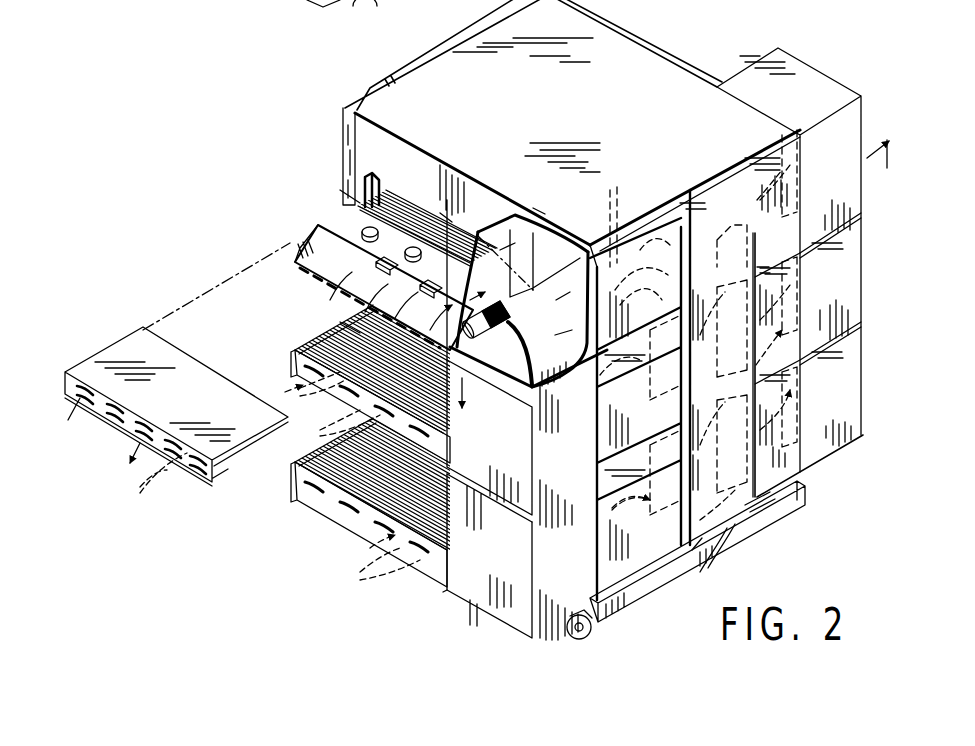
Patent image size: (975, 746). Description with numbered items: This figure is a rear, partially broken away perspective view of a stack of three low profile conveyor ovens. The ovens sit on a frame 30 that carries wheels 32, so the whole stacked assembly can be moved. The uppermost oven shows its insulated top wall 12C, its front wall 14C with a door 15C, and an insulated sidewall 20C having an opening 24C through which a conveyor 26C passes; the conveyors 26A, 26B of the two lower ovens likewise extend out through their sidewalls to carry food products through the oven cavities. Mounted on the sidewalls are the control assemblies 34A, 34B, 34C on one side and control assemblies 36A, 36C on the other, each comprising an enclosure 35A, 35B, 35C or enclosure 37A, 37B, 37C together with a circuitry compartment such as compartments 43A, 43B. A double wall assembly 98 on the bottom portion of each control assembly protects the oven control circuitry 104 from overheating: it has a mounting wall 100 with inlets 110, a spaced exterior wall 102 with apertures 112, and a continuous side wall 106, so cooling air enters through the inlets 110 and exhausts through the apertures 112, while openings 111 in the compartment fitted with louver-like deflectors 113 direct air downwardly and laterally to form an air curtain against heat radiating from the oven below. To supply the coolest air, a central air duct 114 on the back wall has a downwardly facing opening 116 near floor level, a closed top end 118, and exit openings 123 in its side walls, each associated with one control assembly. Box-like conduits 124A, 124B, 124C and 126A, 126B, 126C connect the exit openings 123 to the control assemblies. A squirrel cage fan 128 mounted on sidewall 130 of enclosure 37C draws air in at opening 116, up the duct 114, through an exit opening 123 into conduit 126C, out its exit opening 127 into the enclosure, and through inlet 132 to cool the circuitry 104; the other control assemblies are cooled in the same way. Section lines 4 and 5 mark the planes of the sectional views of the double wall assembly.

The section line 4- 4 is at (670, 288).
The section line 5- 5 is at (282, 210).
The top wall 12C is at (573, 88).
The front wall 14C is at (367, 97).
The door 15C is at (466, 36).
The sidewall 20C is at (436, 189).
The sidewall opening 24C is at (371, 175).
The conveyor 26A is at (324, 444).
The conveyor 26B is at (295, 349).
The conveyor 26C is at (427, 213).
The frame 30 is at (640, 601).
The wheels 32 is at (592, 631).
The control assembly 34A is at (865, 402).
The control assembly 34B is at (865, 290).
The control assembly 34C is at (833, 72).
The enclosure 35A is at (858, 414).
The enclosure 35B is at (856, 286).
The enclosure 35C is at (860, 171).
The control assembly 36A is at (444, 597).
The control assembly 36C is at (552, 206).
The enclosure 37A is at (504, 564).
The enclosure 37B is at (511, 466).
The enclosure 37C is at (519, 262).
The circuitry compartment 43A is at (297, 502).
The circuitry compartment 43B is at (291, 366).
The double wall assembly 98 is at (310, 283).
The mounting wall 100 is at (343, 231).
The exterior wall 102 is at (336, 322).
The oven control circuitry 104 is at (356, 233).
The continuous side wall 106 is at (300, 267).
The inlets 110 is at (454, 222).
The openings 111 is at (270, 495).
The apertures 112 is at (337, 299).
The louver-like deflector 113 is at (300, 390).
The central air duct 114 is at (766, 510).
The downwardly facing opening 116 is at (712, 552).
The closed top end 118 is at (710, 183).
The exit openings 123 is at (697, 192).
The box-like conduit 124A is at (778, 484).
The box-like conduit 124B is at (807, 327).
The box-like conduit 124C is at (750, 167).
The box-like conduit 126A is at (598, 580).
The box-like conduit 126B is at (597, 463).
The box-like conduit 126C is at (650, 233).
The exit opening 127 is at (587, 560).
The squirrel cage fan 128 is at (474, 384).
The sidewall 130 is at (523, 218).
The inlet 132 is at (528, 400).